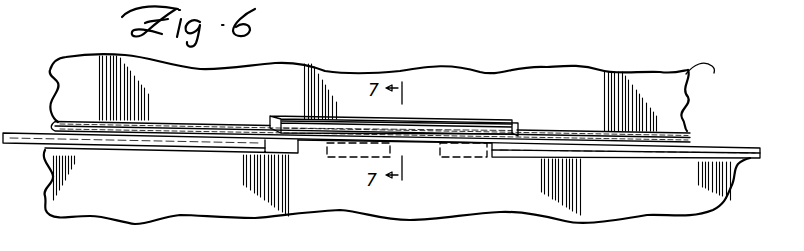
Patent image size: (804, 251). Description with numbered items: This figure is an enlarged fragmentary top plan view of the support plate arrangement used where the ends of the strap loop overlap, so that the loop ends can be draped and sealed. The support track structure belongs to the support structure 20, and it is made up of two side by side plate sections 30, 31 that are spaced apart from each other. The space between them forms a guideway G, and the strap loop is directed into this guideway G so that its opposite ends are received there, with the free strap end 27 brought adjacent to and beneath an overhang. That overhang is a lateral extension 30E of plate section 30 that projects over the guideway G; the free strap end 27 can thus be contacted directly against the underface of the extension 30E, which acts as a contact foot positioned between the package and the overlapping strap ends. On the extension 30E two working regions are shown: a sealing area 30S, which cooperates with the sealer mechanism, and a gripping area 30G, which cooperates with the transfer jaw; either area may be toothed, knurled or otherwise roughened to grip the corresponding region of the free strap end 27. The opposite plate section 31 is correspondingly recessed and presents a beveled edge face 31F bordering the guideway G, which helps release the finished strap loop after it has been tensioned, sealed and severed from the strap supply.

The support structure 20 is at (705, 84).
The plate section 31 is at (186, 100).
The beveled edge face 31F is at (292, 118).
The plate section 30 is at (130, 185).
The lateral extension (overhang) 30E is at (412, 155).
The sealing area 30S is at (350, 150).
The gripping area 30G is at (459, 162).
The free strap end 27 is at (516, 158).
The guideway G is at (604, 152).